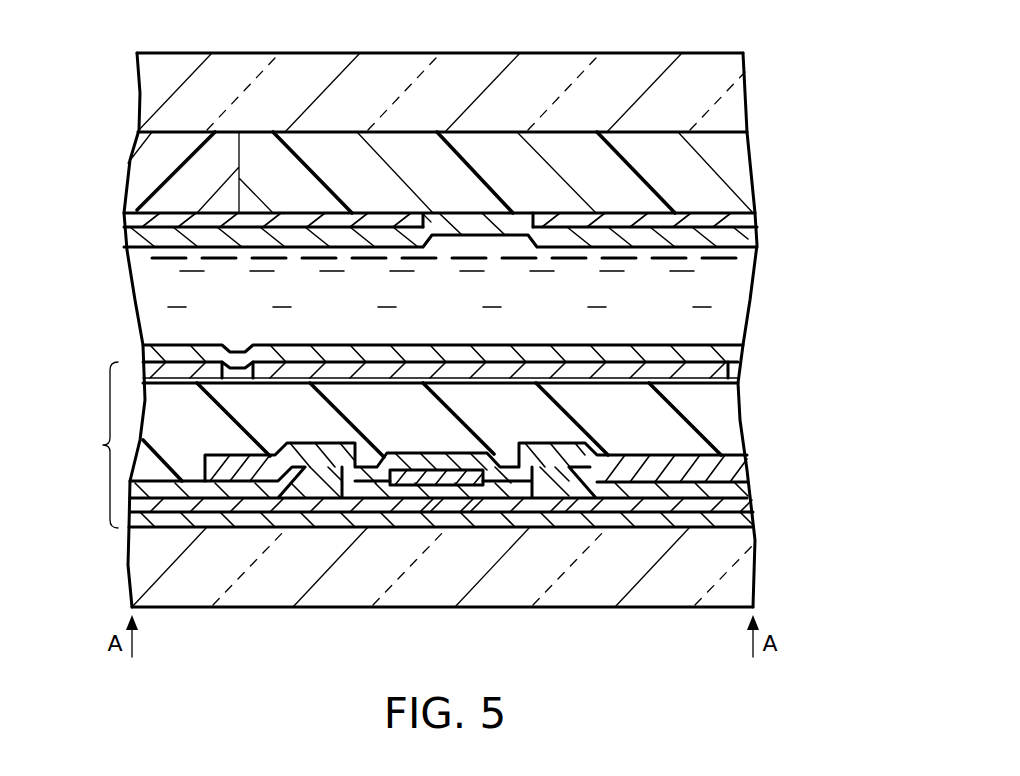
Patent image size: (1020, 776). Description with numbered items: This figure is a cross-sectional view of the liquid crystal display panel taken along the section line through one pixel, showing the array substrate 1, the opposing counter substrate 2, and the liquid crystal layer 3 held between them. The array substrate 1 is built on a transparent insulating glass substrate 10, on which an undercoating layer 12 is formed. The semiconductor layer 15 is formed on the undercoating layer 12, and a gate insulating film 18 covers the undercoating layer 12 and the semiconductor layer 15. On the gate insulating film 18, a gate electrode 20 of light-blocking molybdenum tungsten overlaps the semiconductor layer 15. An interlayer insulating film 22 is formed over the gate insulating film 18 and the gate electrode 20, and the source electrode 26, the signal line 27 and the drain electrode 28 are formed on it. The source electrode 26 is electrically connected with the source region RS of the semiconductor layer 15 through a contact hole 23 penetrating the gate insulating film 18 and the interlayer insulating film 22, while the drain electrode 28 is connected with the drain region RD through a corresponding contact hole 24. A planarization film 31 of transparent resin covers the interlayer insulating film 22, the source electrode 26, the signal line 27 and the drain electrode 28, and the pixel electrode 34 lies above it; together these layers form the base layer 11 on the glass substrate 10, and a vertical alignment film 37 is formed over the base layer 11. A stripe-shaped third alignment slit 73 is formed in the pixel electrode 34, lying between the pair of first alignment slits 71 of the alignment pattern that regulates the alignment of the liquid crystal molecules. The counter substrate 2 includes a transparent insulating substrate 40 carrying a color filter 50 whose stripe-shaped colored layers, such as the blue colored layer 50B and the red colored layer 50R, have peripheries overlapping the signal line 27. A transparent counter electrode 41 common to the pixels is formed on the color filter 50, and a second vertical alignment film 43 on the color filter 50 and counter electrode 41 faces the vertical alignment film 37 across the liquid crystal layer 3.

The array substrate 1 is at (103, 553).
The counter substrate 2 is at (784, 122).
The liquid crystal layer 3 is at (732, 296).
The glass substrate 10 is at (733, 587).
The base layer 11 is at (95, 445).
The undercoating layer 12 is at (748, 525).
The semiconductor layer 15 is at (452, 503).
The gate insulating film 18 is at (742, 508).
The gate electrode 20 is at (403, 487).
The interlayer insulating film 22 is at (740, 490).
The contact hole 23 is at (332, 490).
The contact hole 24 is at (538, 490).
The source electrode 26 is at (320, 490).
The signal line 27 is at (235, 472).
The drain electrode 28 is at (545, 492).
The planarization film 31 is at (727, 430).
The pixel electrode 34 is at (178, 370).
The vertical alignment film 37 is at (737, 350).
The transparent insulating substrate 40 is at (725, 75).
The counter electrode 41 is at (742, 222).
The vertical alignment film 43 is at (752, 241).
The color filter 50 is at (758, 163).
The blue colored layer 50B is at (140, 184).
The red colored layer 50R is at (740, 190).
The first alignment slit 71 is at (426, 212).
The third alignment slit 73 is at (738, 381).
The source region RS is at (357, 516).
The drain region RD is at (570, 516).